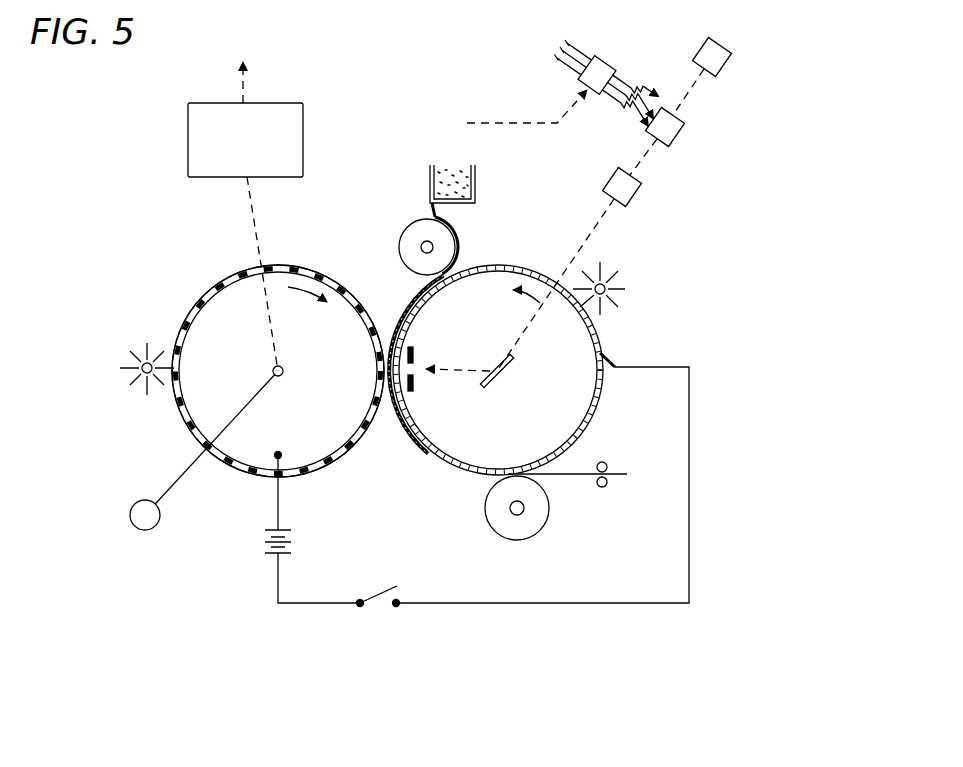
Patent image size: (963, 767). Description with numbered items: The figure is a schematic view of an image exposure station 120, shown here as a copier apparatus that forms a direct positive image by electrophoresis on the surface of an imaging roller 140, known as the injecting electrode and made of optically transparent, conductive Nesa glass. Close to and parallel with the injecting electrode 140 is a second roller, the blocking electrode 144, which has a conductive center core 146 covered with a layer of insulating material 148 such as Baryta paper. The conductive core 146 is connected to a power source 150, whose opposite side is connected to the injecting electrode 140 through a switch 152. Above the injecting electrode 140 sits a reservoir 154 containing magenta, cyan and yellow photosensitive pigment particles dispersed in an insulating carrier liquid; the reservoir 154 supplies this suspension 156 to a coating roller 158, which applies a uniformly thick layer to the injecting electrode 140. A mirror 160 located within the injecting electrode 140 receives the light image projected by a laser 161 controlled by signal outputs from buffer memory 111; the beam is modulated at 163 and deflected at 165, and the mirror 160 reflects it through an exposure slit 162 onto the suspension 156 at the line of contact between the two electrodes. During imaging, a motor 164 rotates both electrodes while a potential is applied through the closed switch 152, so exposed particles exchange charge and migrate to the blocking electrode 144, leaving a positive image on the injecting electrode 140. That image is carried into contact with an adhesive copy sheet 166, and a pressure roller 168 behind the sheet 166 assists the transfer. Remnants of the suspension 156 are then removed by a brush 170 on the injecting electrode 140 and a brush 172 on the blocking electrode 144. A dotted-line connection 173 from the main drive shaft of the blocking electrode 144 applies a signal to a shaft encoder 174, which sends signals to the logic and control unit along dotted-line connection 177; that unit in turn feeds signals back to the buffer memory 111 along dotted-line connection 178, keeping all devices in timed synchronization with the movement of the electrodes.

The buffer memory 111 is at (609, 65).
The image exposure station 120 is at (707, 265).
The imaging roller 140 is at (497, 255).
The blocking electrode 144 is at (198, 297).
The conductive center core 146 is at (248, 339).
The layer of insulating material 148 is at (248, 268).
The power source 150 is at (253, 538).
The switch 152 is at (385, 608).
The reservoir 154 is at (475, 172).
The suspension 156 is at (403, 303).
The coating roller 158 is at (413, 225).
The mirror 160 is at (502, 374).
The laser 161 is at (720, 50).
The exposure slit 162 is at (420, 362).
The modulator 163 is at (682, 124).
The motor 164 is at (132, 504).
The deflector 165 is at (632, 187).
The copy sheet 166 is at (572, 478).
The pressure roller 168 is at (532, 535).
The brush 170 is at (610, 268).
The brush 172 is at (137, 360).
The dotted-line connection 173 is at (252, 200).
The shaft encoder 174 is at (188, 138).
The dotted-line connection 177 is at (245, 83).
The dotted-line connection 178 is at (495, 122).